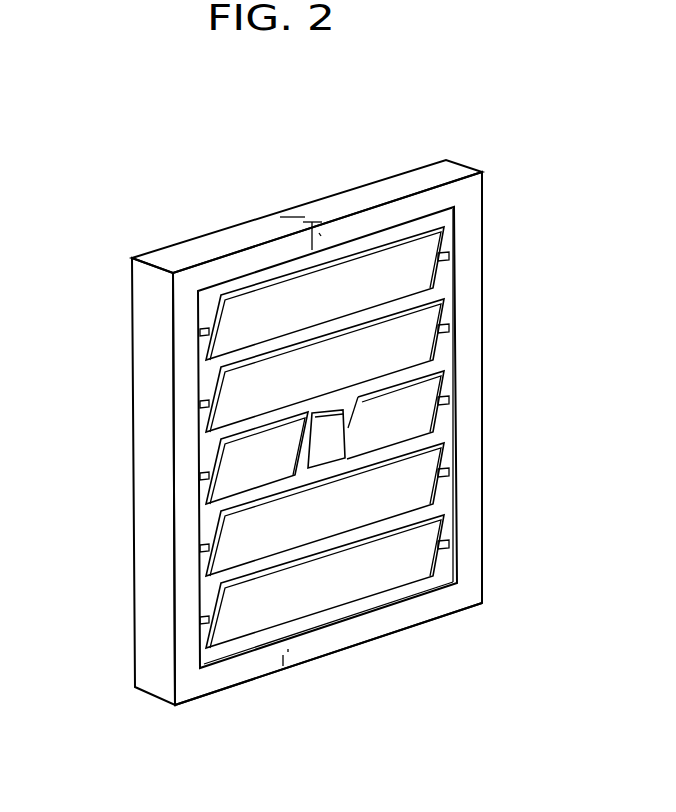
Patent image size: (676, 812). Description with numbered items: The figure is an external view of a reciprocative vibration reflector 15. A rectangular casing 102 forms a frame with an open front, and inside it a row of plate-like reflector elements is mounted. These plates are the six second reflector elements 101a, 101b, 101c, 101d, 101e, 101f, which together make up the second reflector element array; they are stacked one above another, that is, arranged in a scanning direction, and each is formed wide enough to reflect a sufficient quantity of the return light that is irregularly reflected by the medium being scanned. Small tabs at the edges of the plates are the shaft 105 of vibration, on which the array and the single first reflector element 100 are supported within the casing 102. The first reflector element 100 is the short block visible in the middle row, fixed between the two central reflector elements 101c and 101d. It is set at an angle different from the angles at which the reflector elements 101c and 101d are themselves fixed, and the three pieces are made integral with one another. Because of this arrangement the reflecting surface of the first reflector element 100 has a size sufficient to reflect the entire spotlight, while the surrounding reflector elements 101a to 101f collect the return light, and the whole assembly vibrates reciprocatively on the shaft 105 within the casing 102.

The filter frame 15 is at (480, 161).
The first reflector element 100 is at (318, 447).
The second reflector element 101a is at (228, 313).
The second reflector element 101b is at (229, 386).
The second reflector element 101c is at (229, 458).
The second reflector element 101d is at (425, 412).
The second reflector element 101e is at (222, 562).
The second reflector element 101f is at (228, 630).
The casing 102 is at (327, 640).
The shaft 105 is at (452, 327).